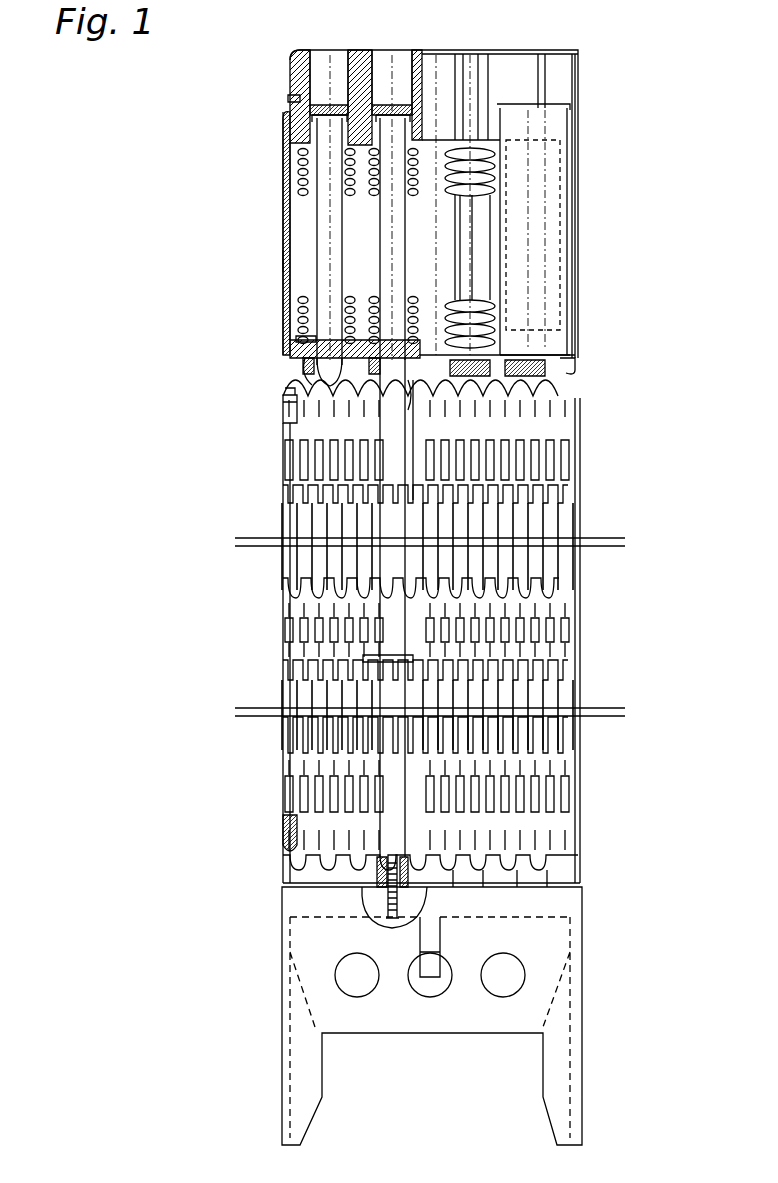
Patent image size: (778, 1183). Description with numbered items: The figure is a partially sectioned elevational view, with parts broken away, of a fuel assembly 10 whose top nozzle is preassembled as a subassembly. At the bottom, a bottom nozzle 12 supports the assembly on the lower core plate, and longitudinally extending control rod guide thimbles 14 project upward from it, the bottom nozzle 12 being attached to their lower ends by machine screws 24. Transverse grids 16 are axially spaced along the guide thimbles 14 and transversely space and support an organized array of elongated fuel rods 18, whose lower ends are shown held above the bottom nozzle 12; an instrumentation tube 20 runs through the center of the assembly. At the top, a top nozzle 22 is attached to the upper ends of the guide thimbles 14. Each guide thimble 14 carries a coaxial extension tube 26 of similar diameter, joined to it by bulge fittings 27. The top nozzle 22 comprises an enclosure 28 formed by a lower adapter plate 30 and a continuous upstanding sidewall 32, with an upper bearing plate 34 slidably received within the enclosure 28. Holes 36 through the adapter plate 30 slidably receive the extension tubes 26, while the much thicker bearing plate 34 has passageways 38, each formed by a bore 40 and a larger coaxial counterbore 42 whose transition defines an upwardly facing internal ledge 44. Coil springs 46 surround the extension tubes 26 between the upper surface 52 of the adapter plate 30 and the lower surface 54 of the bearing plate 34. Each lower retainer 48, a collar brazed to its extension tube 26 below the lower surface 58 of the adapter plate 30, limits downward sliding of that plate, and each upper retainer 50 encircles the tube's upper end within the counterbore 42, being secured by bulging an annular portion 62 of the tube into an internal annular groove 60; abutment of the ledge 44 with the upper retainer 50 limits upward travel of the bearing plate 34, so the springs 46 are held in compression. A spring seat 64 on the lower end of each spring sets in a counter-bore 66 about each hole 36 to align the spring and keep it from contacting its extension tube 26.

The fuel assembly 10 is at (610, 430).
The bottom nozzle 12 is at (582, 928).
The control rod guide thimbles 14 is at (383, 435).
The transverse grids 16 is at (580, 455).
The fuel rods 18 is at (298, 575).
The instrumentation tube 20 is at (433, 388).
The top nozzle 22 is at (607, 253).
The machine screws 24 is at (383, 905).
The guide thimble extension tube 26 is at (320, 242).
The bulge fittings 27 is at (415, 395).
The enclosure 28 is at (283, 192).
The lower adapter plate 30 is at (292, 360).
The sidewall 32 is at (282, 263).
The upper bearing plate 34 is at (292, 76).
The holes 36 is at (312, 372).
The passageways 38 is at (315, 62).
The bore 40 is at (386, 136).
The counterbore 42 is at (410, 60).
The internal ledge 44 is at (284, 128).
The coil springs 46 is at (420, 160).
The lower retainer 48 is at (302, 366).
The upper retainer 50 is at (296, 97).
The upper surface 52 is at (368, 305).
The lower surface 54 is at (352, 146).
The lower surface 58 is at (575, 362).
The internal annular groove 60 is at (376, 108).
The annular portion 62 is at (332, 110).
The spring seat 64 is at (302, 338).
The counter-bore 66 is at (283, 412).